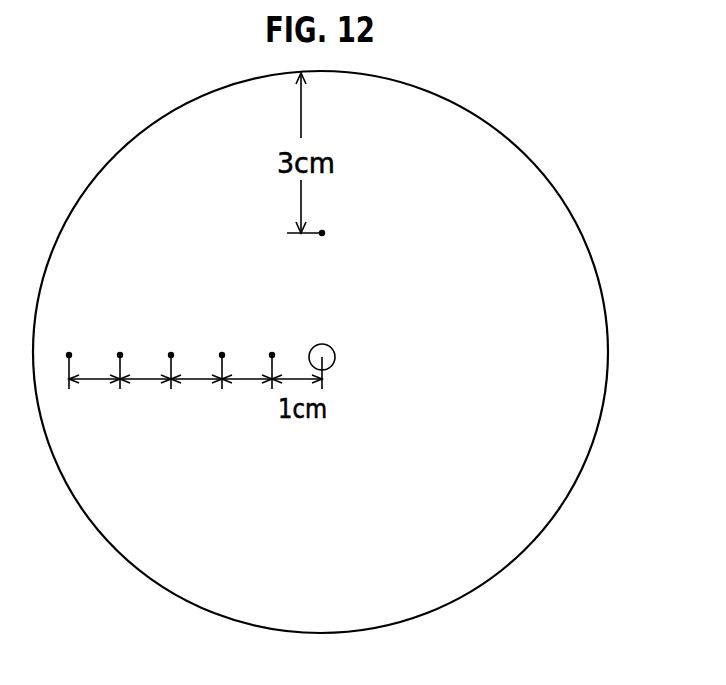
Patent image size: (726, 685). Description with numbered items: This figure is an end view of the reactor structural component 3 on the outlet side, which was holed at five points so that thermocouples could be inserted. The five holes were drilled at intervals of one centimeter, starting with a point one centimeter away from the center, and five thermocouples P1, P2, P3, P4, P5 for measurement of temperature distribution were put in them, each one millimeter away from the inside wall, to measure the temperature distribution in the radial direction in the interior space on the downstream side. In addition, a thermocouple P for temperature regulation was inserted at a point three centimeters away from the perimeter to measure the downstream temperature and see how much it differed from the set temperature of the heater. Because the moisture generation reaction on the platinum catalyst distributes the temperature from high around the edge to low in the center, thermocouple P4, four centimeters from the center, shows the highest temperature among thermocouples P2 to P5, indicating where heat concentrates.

The reactor structural component on the outlet side 3 is at (490, 198).
The thermocouple for temperature regulation P is at (336, 232).
The thermocouple for measurement of temperature distribution P1 is at (276, 351).
The thermocouple for measurement of temperature distribution P2 is at (226, 351).
The thermocouple for measurement of temperature distribution P3 is at (175, 351).
The thermocouple for measurement of temperature distribution P4 is at (124, 351).
The thermocouple for measurement of temperature distribution P5 is at (74, 351).